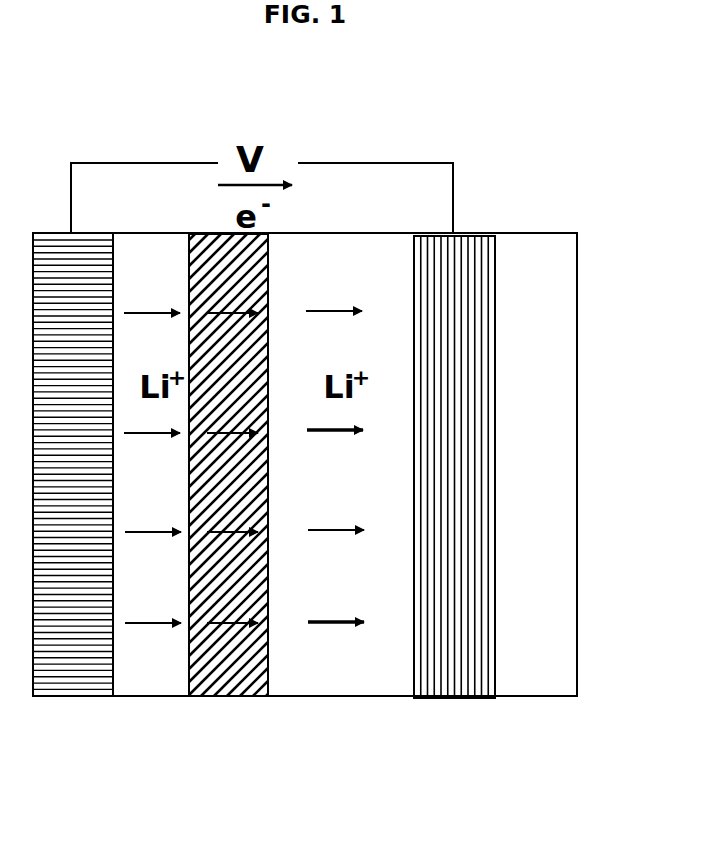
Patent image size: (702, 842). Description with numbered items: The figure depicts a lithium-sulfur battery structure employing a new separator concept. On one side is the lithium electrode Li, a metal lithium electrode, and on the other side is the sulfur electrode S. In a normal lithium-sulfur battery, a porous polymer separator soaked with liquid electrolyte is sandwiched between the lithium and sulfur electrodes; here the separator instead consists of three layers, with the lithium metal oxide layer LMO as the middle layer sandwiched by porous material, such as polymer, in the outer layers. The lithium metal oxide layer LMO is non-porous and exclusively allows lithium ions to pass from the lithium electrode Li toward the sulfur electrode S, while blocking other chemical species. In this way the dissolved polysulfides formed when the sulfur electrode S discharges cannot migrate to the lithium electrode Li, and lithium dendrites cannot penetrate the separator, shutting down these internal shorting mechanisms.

The lithium electrode Li is at (73, 464).
The lithium metal oxide layer LMO is at (229, 697).
The sulfur electrode S is at (454, 467).